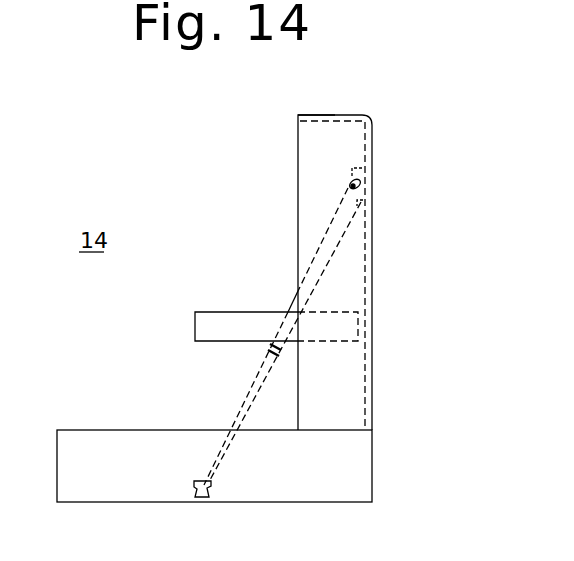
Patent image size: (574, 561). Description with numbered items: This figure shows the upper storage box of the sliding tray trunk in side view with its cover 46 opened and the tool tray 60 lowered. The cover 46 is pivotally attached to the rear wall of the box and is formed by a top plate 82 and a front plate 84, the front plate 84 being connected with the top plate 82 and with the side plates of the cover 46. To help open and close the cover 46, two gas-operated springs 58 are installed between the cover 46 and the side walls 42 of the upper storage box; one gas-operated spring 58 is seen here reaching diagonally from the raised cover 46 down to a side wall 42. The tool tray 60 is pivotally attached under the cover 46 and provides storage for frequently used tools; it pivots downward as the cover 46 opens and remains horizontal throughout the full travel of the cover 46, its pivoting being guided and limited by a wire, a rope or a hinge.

The side walls 42 is at (285, 487).
The cover 46 is at (310, 114).
The gas-operated springs 58 is at (290, 303).
The tool tray 60 is at (224, 342).
The top plate 82 is at (372, 275).
The front plate 84 is at (358, 114).